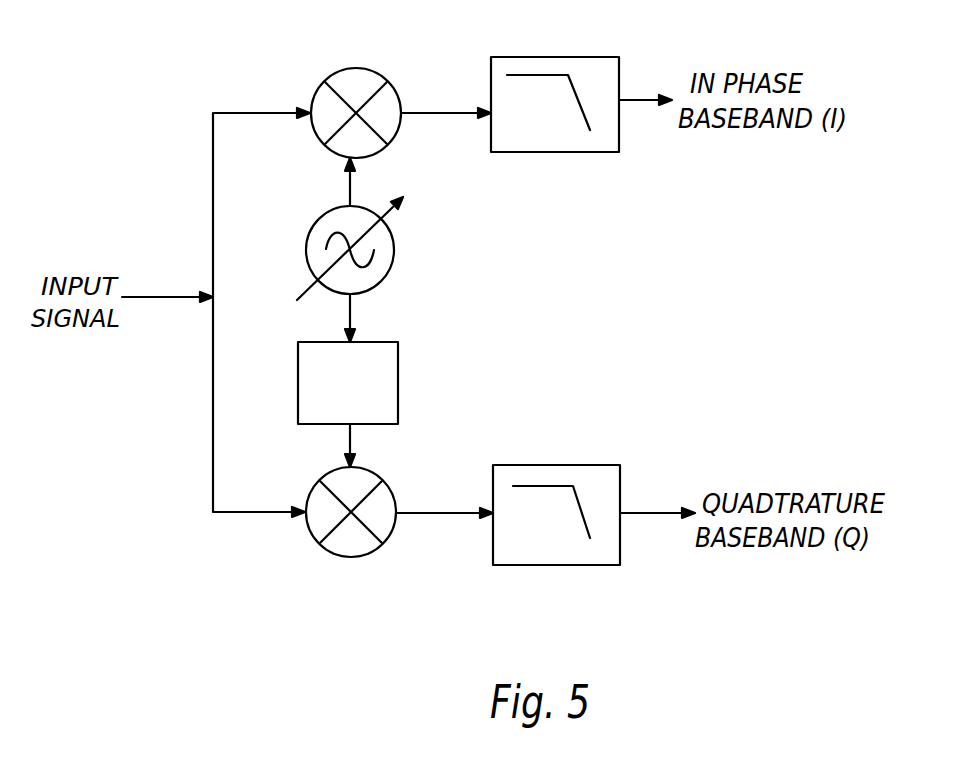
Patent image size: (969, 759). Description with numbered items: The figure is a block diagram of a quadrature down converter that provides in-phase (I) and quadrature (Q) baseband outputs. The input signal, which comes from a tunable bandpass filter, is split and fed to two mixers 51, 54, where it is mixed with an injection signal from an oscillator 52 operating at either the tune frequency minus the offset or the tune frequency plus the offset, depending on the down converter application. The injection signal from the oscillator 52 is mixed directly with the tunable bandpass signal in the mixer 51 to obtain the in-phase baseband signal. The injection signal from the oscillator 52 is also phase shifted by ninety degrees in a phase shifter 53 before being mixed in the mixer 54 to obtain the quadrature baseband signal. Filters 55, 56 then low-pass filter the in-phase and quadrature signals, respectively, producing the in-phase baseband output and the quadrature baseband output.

The mixer 51 is at (352, 68).
The oscillator 52 is at (393, 237).
The phase shifter 53 is at (400, 347).
The mixer 54 is at (370, 553).
The filter 55 is at (555, 57).
The filter 56 is at (548, 465).